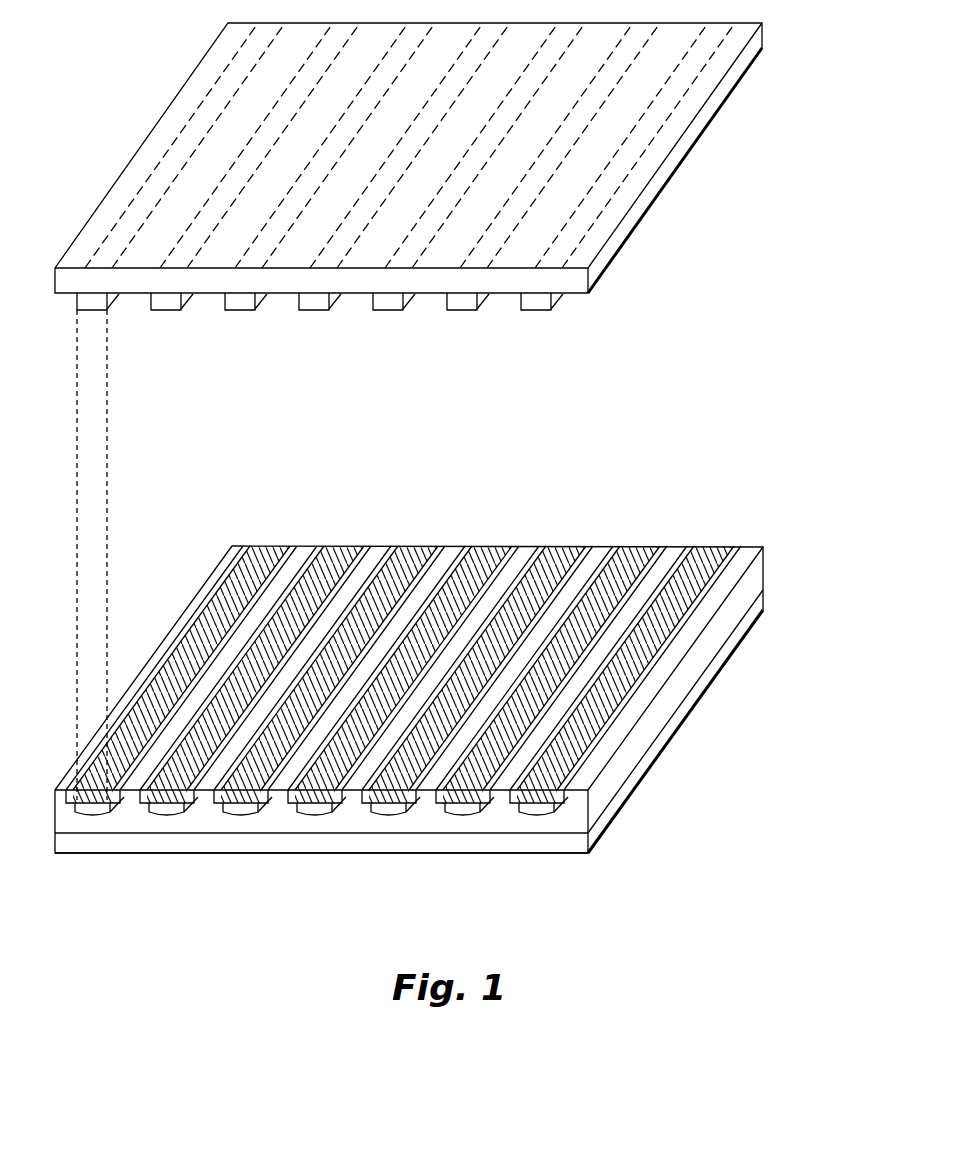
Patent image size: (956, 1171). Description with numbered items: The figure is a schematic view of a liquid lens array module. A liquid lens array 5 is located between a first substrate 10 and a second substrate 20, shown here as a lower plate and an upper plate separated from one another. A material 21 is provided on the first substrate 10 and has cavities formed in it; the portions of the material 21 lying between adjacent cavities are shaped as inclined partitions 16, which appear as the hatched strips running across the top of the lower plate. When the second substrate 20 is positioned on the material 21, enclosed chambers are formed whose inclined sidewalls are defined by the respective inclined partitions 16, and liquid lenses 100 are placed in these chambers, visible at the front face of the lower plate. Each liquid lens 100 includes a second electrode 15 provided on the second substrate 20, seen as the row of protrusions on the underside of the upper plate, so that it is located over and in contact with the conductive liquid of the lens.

The liquid lens array 5 is at (451, 684).
The first substrate 10 is at (593, 830).
The second electrode 15 is at (546, 300).
The inclined partition 16 is at (678, 556).
The second substrate 20 is at (706, 112).
The material 21 is at (610, 780).
The liquid lens 100 is at (97, 813).